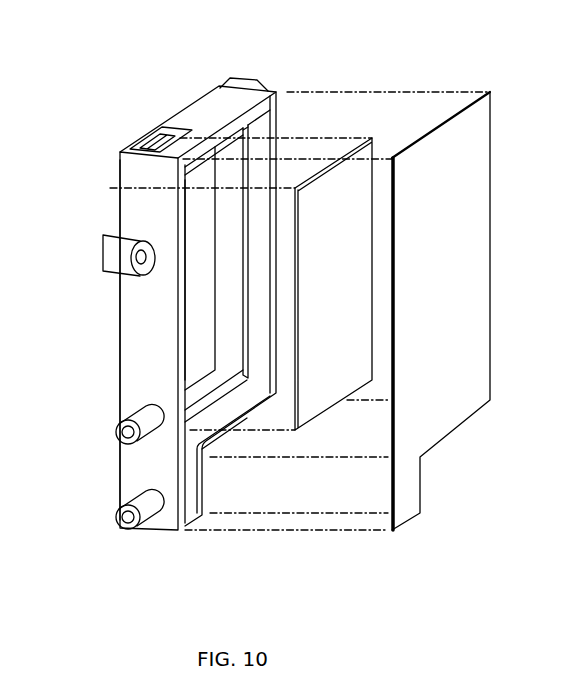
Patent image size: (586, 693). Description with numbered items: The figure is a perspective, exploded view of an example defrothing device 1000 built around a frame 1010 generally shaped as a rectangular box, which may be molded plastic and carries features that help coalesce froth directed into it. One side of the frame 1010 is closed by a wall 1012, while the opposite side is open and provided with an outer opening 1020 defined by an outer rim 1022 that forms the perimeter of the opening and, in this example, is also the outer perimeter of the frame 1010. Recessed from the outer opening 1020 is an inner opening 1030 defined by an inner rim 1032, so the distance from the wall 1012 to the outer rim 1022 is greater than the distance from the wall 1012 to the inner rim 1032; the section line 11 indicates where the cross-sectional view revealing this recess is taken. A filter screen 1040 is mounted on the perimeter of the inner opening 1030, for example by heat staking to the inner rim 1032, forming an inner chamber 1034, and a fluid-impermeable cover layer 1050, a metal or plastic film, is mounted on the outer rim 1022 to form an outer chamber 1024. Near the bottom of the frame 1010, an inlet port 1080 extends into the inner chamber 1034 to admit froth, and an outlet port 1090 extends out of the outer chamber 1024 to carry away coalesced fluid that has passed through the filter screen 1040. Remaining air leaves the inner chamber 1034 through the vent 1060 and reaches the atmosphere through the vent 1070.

The section line 11 is at (200, 577).
The defrothing device 1000 is at (360, 63).
The frame 1010 is at (192, 112).
The wall 1012 is at (195, 231).
The outer opening 1020 is at (262, 138).
The outer rim 1022 is at (281, 148).
The outer chamber 1024 is at (237, 414).
The inner opening 1030 is at (201, 201).
The inner rim 1032 is at (178, 138).
The inner chamber 1034 is at (200, 305).
The filter screen 1040 is at (396, 158).
The cover layer 1050 is at (477, 128).
The vent 1060 is at (244, 131).
The vent 1070 is at (168, 131).
The inlet port 1080 is at (136, 417).
The outlet port 1090 is at (139, 504).